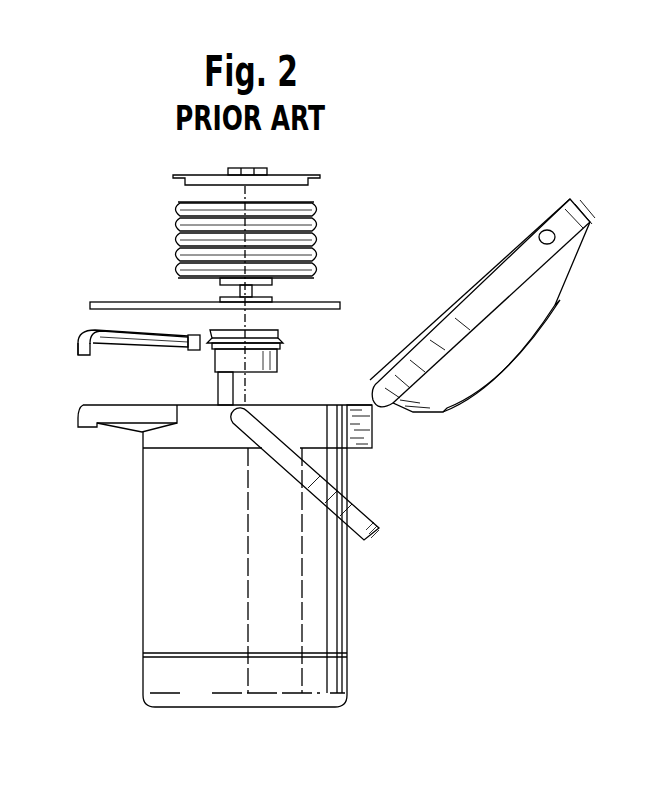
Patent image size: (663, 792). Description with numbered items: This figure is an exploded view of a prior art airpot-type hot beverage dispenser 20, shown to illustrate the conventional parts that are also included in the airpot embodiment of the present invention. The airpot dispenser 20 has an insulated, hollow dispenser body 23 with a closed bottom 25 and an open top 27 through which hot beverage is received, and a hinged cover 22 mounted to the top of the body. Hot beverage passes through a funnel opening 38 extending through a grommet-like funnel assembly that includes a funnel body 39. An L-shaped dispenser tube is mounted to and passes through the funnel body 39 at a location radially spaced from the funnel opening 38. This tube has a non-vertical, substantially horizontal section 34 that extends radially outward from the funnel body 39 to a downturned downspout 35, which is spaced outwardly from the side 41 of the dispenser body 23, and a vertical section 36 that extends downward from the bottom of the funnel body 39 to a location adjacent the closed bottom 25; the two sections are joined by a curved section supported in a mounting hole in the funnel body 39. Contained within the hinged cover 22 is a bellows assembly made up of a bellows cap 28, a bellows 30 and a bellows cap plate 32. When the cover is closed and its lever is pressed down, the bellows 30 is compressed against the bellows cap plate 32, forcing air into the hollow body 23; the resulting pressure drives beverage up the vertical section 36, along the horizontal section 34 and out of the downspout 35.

The airpot dispenser 20 is at (115, 170).
The hinged cover 22 is at (555, 280).
The dispenser body 23 is at (333, 623).
The closed bottom 25 is at (323, 707).
The open top 27 is at (330, 405).
The bellows cap 28 is at (300, 175).
The bellows 30 is at (320, 242).
The bellows cap plate 32 is at (330, 302).
The horizontal section 34 is at (120, 333).
The downspout 35 is at (80, 345).
The vertical section 36 is at (218, 392).
The funnel opening 38 is at (272, 333).
The funnel body 39 is at (266, 374).
The side 41 is at (143, 575).